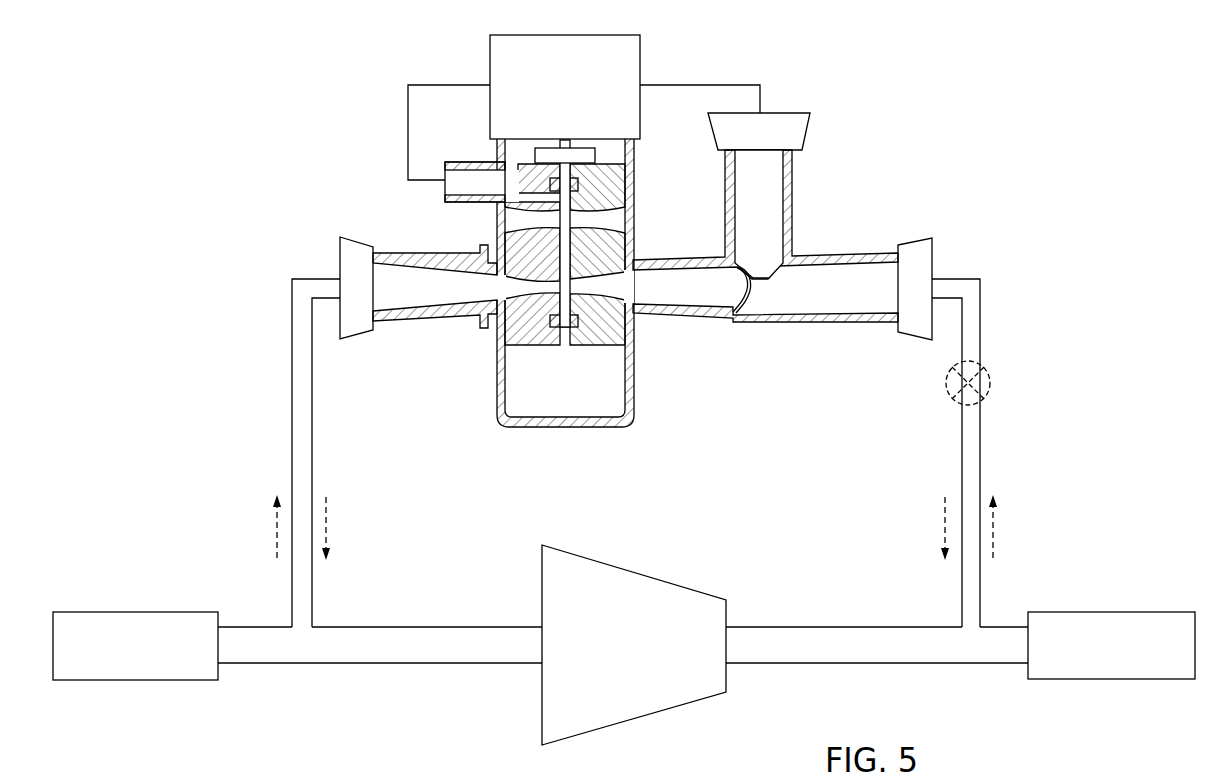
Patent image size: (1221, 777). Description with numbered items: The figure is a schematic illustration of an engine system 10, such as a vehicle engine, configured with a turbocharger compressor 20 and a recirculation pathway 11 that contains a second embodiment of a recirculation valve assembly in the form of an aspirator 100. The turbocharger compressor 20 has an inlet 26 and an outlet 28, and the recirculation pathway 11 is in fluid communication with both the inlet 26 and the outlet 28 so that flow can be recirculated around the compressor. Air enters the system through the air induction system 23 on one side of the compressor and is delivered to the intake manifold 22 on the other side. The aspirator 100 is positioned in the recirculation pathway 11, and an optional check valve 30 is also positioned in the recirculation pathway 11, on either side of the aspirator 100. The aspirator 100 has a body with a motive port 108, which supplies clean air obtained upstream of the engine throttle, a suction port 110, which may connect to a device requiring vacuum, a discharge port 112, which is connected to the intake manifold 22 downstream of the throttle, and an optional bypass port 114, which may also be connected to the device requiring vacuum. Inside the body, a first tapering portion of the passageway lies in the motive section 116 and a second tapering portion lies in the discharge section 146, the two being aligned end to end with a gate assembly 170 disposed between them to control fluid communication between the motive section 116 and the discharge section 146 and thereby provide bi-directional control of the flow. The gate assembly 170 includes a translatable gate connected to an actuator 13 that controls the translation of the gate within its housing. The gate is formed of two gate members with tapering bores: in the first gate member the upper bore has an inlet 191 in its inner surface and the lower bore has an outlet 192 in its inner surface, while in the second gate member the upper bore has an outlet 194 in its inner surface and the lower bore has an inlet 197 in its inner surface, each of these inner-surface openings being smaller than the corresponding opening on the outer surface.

The engine system 10 is at (1066, 103).
The recirculation pathway 11 is at (292, 398).
The actuator 13 is at (490, 55).
The turbocharger compressor 20 is at (637, 718).
The intake manifold 22 is at (1126, 612).
The air induction system 23 is at (140, 612).
The inlet 26 is at (540, 665).
The outlet 28 is at (728, 665).
The check valve 30 is at (992, 383).
The aspirator 100 is at (832, 161).
The motive port 108 is at (380, 308).
The suction port 110 is at (445, 162).
The discharge port 112 is at (870, 308).
The bypass port 114 is at (708, 188).
The motive section 116 is at (392, 272).
The discharge section 146 is at (851, 272).
The gate assembly 170 is at (519, 436).
The inlet 191 is at (562, 217).
The outlet 192 is at (562, 289).
The outlet 194 is at (573, 217).
The inlet 197 is at (573, 289).